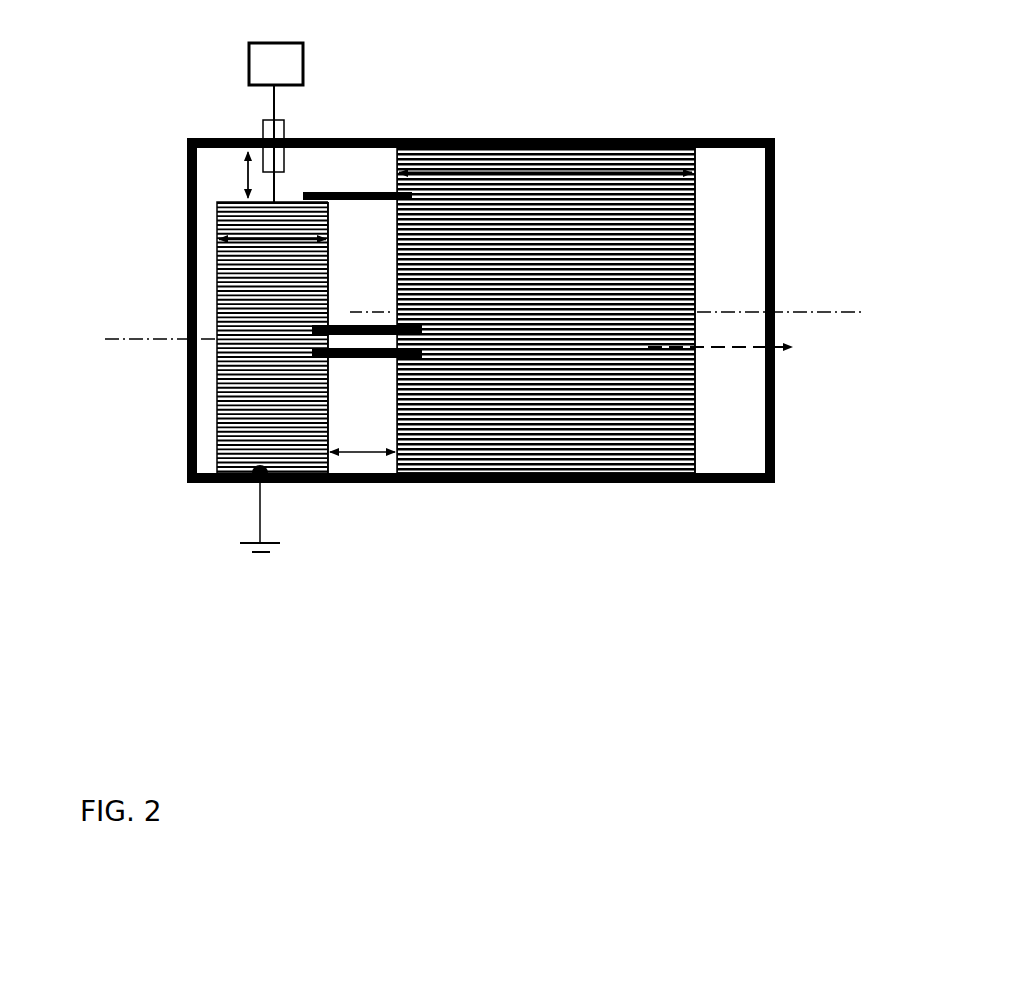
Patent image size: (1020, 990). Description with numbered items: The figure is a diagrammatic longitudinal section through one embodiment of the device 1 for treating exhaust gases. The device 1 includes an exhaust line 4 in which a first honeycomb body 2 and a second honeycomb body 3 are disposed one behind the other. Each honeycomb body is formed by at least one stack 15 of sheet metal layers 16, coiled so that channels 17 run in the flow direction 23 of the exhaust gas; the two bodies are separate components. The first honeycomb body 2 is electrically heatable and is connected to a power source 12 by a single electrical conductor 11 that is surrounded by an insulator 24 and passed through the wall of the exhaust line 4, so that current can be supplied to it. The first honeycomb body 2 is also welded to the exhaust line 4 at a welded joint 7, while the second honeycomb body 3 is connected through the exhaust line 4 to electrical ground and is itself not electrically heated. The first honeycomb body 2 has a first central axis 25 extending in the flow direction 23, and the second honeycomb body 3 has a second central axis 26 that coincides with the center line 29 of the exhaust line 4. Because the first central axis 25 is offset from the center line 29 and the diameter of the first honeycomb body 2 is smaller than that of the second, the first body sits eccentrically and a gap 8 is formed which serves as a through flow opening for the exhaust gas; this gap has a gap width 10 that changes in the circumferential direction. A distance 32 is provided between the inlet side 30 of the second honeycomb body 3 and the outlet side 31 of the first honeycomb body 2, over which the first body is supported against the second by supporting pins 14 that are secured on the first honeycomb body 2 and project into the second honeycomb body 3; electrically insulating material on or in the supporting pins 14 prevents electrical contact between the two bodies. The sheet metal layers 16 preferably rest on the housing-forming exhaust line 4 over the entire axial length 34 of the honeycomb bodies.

The device 1 is at (118, 206).
The first honeycomb body 2 is at (215, 402).
The second honeycomb body 3 is at (697, 185).
The exhaust line 4 is at (303, 140).
The welded joint 7 is at (275, 483).
The gap 8 is at (232, 177).
The gap width 10 is at (245, 195).
The electrical conductor 11 is at (273, 183).
The power source 12 is at (303, 42).
The supporting pins 14 is at (347, 202).
The stack 15 is at (331, 390).
The sheet metal layers 16 is at (232, 300).
The channels 17 is at (645, 483).
The flow direction 23 is at (777, 350).
The insulator 24 is at (283, 110).
The first central axis 25 is at (115, 340).
The second central axis 26 is at (754, 362).
The center line 29 is at (828, 305).
The inlet side 30 is at (467, 487).
The outlet side 31 is at (730, 483).
The distance 32 is at (370, 460).
The axial length 34 is at (220, 230).